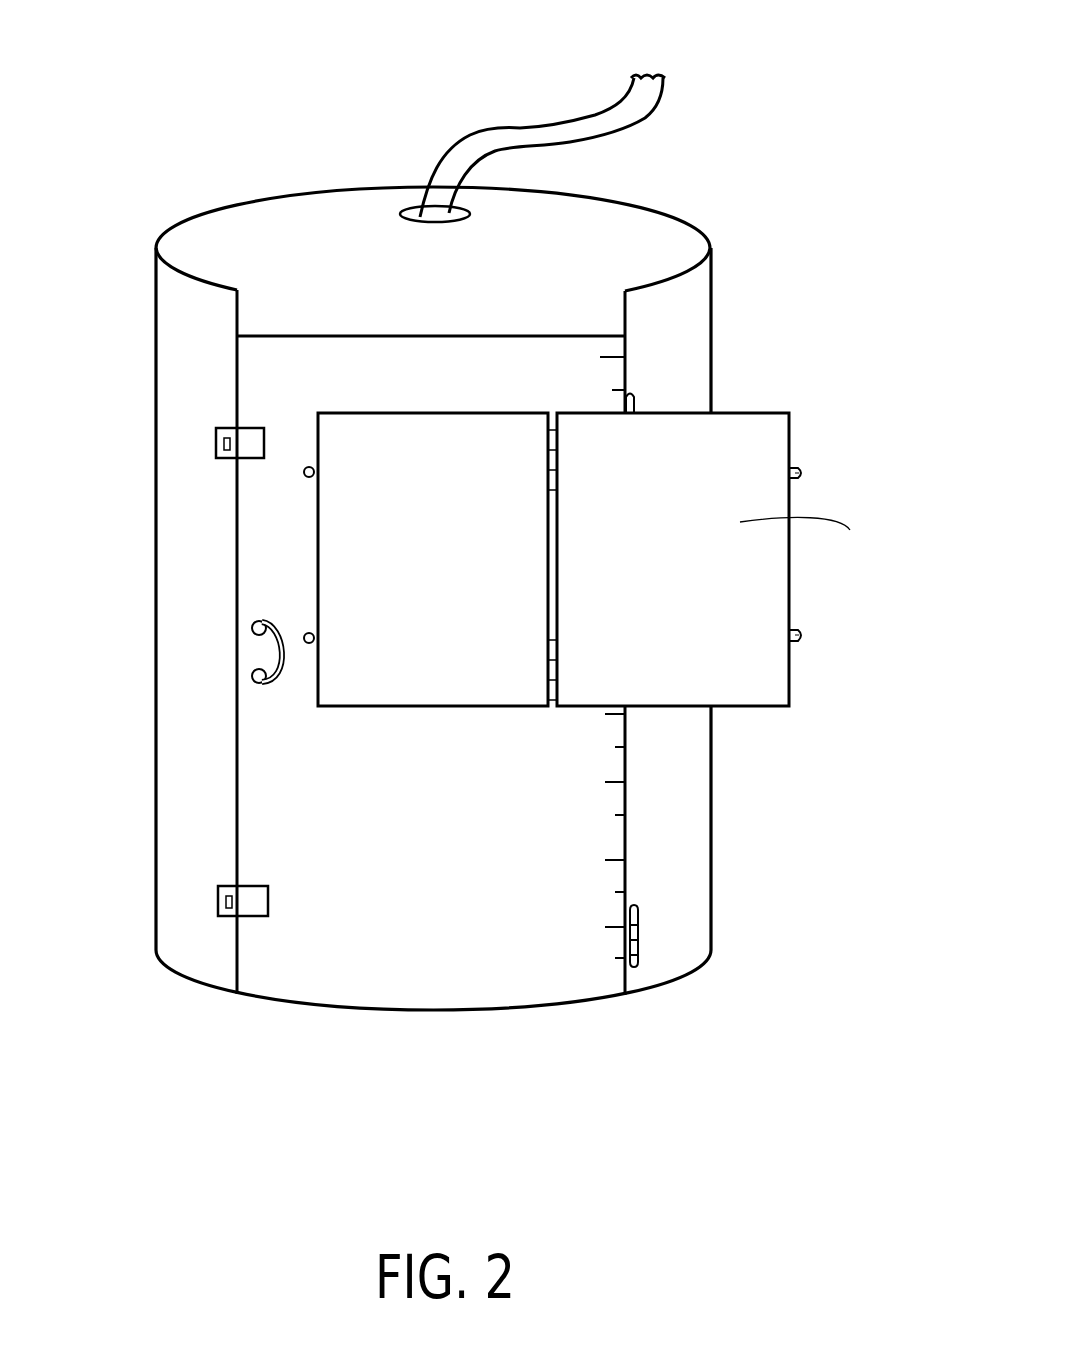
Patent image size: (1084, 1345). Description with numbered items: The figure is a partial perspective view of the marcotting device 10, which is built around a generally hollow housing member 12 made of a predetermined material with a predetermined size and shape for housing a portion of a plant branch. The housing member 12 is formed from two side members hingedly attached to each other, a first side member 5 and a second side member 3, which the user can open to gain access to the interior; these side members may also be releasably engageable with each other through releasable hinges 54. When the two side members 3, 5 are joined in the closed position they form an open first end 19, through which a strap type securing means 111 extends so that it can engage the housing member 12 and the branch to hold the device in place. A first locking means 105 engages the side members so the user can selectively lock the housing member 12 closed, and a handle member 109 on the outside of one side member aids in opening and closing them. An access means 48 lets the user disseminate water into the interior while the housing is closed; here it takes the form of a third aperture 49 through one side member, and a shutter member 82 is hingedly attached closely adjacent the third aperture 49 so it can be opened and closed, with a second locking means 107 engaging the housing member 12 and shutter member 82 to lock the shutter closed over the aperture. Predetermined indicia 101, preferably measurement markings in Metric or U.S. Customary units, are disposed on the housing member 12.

The marcotting device 10 is at (803, 104).
The first side member 5 is at (190, 945).
The second side member 3 is at (327, 962).
The housing member 12 is at (660, 337).
The open first end 19 is at (609, 237).
The strap type securing means 111 is at (494, 142).
The third aperture 49 is at (366, 437).
The access means 48 is at (452, 447).
The shutter member 82 is at (850, 530).
The first locking means 105 is at (216, 447).
The second locking means 107 is at (305, 476).
The handle member 109 is at (256, 683).
The predetermined indicia 101 is at (597, 726).
The releasable hinges 54 is at (640, 943).